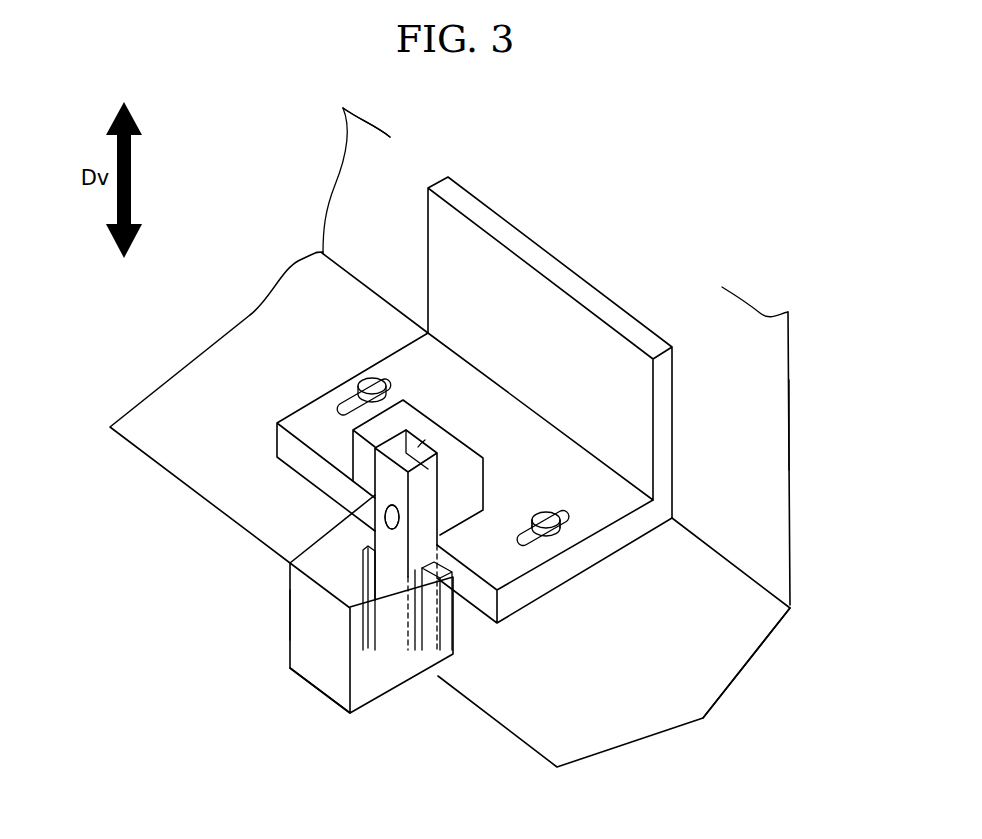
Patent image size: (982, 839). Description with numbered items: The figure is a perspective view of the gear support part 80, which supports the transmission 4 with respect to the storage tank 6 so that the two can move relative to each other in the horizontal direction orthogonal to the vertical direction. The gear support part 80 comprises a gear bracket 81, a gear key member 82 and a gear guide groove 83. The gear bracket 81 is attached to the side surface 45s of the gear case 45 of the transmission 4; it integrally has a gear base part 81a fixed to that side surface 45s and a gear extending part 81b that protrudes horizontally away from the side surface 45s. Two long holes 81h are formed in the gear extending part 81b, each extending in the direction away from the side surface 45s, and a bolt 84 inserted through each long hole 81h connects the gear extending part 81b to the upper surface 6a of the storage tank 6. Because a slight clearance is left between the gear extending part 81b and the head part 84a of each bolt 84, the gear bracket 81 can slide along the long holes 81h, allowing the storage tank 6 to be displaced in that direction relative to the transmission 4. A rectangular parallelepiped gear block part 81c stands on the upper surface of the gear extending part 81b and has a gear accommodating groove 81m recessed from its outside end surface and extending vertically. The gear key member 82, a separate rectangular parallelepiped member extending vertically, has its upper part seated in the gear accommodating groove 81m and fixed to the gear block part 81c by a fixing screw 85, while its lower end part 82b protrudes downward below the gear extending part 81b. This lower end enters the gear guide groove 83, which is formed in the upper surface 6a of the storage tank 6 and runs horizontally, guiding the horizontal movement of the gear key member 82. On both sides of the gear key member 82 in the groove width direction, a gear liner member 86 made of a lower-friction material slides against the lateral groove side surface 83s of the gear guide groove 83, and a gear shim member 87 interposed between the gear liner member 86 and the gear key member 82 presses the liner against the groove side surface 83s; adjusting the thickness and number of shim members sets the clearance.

The transmission 4 is at (352, 199).
The storage tank 6 is at (146, 417).
The upper surface of the storage tank 6a is at (748, 633).
The gear case 45 is at (768, 330).
The side surface of the gear case 45s is at (763, 393).
The gear support part 80 is at (293, 398).
The gear bracket 81 is at (673, 490).
The gear base part 81a is at (647, 340).
The gear extending part 81b is at (607, 547).
The gear block part 81c is at (405, 398).
The long hole 81h is at (383, 380).
The gear accommodating groove 81m is at (418, 446).
The gear key member 82 is at (277, 548).
The lower end part of the gear key member 82b is at (410, 640).
The gear guide groove 83 is at (287, 623).
The groove side surface 83s is at (297, 593).
The bolt 84 is at (363, 380).
The head part of the bolt 84a is at (556, 505).
The fixing screw 85 is at (440, 637).
The gear liner member 86 is at (362, 550).
The gear shim member 87 is at (380, 645).